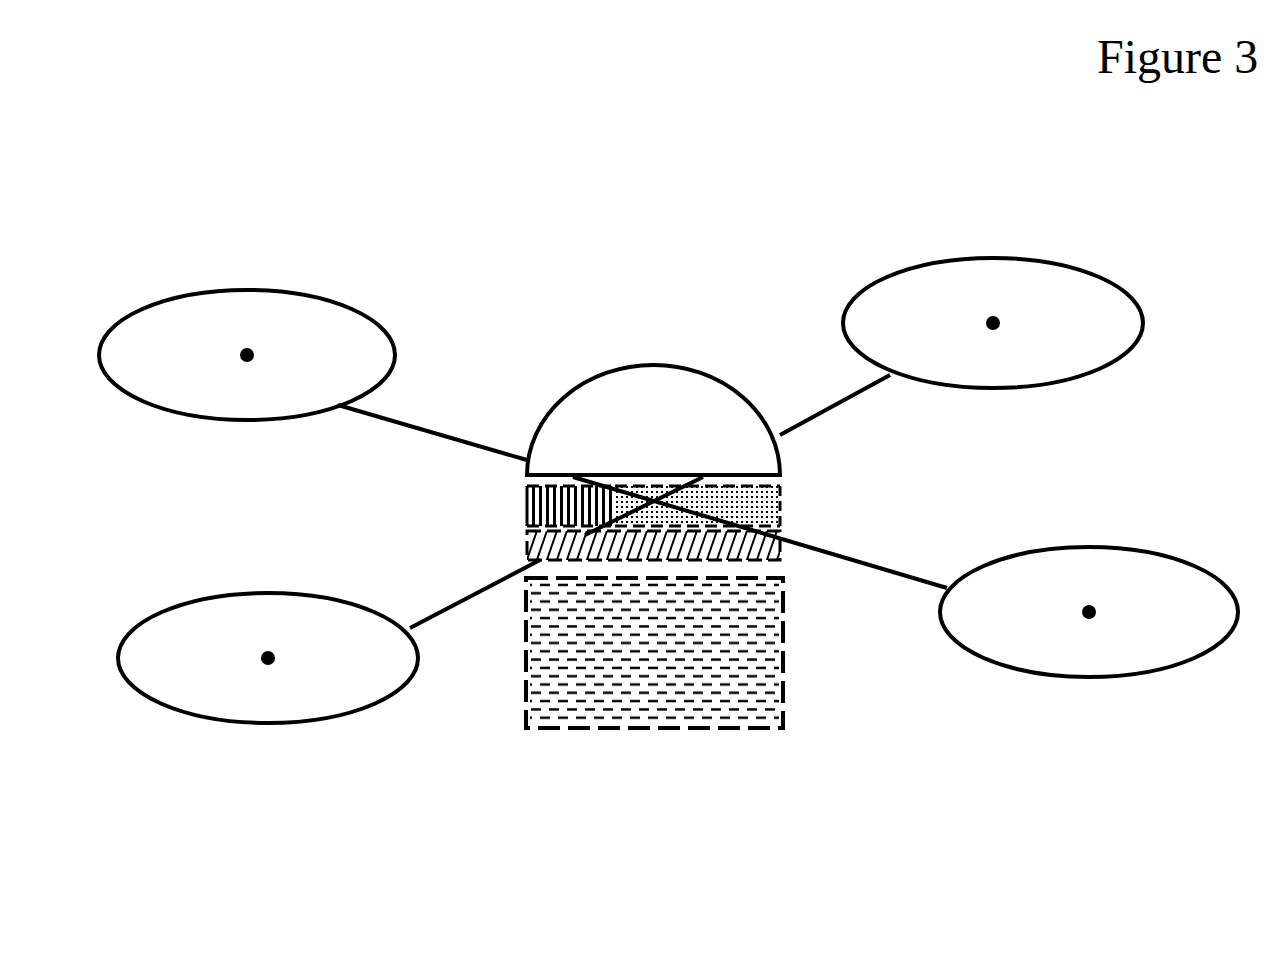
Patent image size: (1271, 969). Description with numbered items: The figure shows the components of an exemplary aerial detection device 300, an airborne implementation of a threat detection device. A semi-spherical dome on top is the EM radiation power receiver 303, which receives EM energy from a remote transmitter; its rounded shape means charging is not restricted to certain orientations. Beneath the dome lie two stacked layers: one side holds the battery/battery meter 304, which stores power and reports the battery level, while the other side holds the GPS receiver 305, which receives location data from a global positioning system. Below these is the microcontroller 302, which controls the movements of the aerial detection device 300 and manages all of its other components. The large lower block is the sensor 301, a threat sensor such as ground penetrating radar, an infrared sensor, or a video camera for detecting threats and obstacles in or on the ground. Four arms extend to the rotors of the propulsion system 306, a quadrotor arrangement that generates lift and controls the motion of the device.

The aerial detection device 300 is at (778, 188).
The sensor 301 is at (637, 727).
The microcontroller 302 is at (780, 550).
The EM radiation power receiver 303 is at (670, 415).
The battery/battery meter 304 is at (527, 507).
The GPS receiver 305 is at (782, 512).
The propulsion system 306 is at (248, 290).